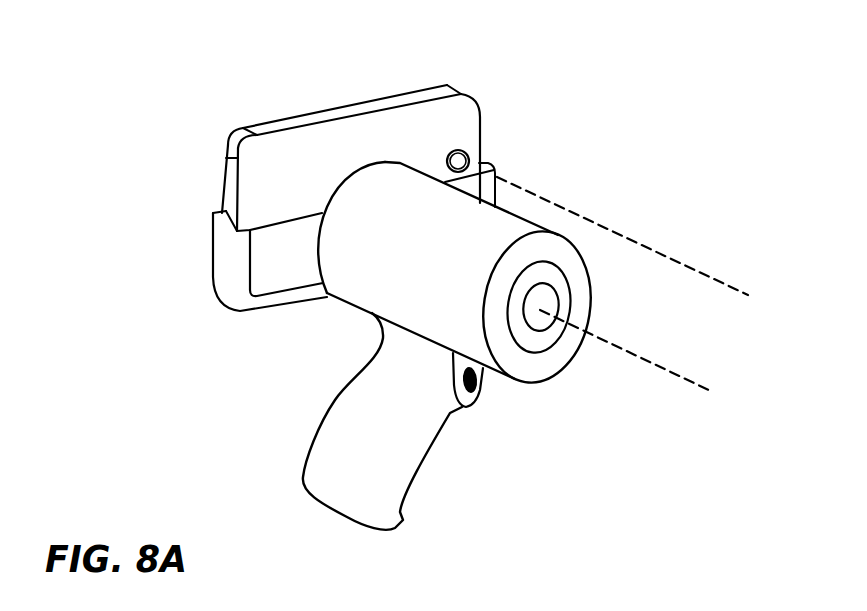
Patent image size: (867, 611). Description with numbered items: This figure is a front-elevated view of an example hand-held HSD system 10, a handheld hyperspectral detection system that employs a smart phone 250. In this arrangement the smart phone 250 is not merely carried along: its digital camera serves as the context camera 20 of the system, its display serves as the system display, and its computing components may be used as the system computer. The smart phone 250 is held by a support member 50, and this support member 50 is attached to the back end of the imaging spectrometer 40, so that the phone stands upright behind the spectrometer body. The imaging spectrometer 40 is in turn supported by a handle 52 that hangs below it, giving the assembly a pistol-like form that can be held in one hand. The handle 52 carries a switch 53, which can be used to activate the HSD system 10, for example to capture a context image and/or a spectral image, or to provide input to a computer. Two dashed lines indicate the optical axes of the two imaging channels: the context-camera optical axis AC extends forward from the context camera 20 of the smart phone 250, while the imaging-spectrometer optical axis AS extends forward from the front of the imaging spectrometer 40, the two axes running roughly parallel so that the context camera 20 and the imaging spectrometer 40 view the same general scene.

The hand-held HSD system 10 is at (221, 72).
The smart phone 250 is at (210, 144).
The context camera 20 is at (470, 161).
The support member 50 is at (233, 277).
The imaging spectrometer 40 is at (372, 294).
The handle 52 is at (337, 437).
The switch 53 is at (482, 383).
The context-camera optical axis AC is at (674, 257).
The imaging-spectrometer optical axis AS is at (650, 362).